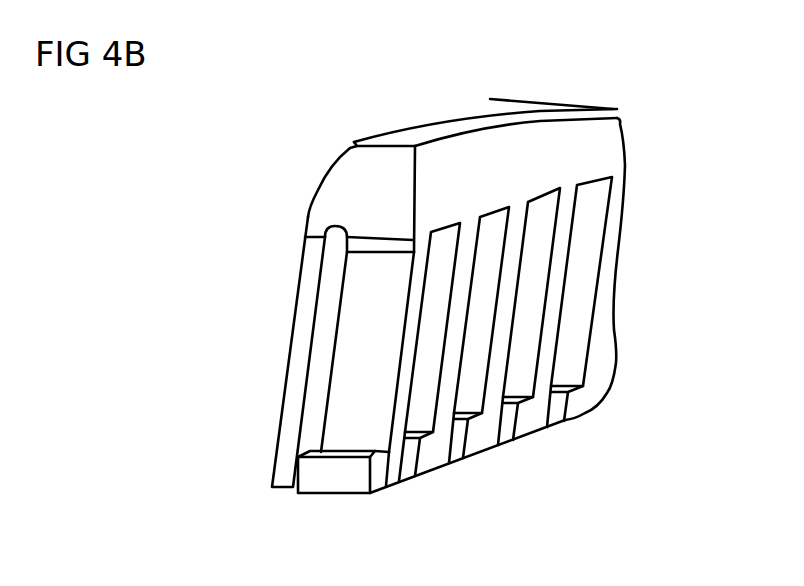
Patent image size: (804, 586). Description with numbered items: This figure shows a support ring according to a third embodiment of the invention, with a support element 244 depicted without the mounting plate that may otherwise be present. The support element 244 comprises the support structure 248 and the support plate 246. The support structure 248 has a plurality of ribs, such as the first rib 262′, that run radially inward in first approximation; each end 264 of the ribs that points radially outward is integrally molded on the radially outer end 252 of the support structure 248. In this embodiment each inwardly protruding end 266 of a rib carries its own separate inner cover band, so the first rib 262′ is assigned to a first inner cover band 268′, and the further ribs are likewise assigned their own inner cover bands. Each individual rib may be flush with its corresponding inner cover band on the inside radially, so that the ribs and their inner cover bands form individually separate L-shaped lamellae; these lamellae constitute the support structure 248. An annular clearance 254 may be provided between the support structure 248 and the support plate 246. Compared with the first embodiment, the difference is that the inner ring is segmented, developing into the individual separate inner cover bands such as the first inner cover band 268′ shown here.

The support element 244 is at (651, 116).
The support plate 246 is at (277, 456).
The support structure 248 is at (363, 508).
The radially outer end 252 is at (545, 135).
The annular clearance 254 is at (330, 283).
The first rib 262′ is at (350, 350).
The end of the ribs 264 is at (567, 197).
The inwardly protruding end 266 is at (395, 448).
The first inner cover band 268′ is at (377, 480).